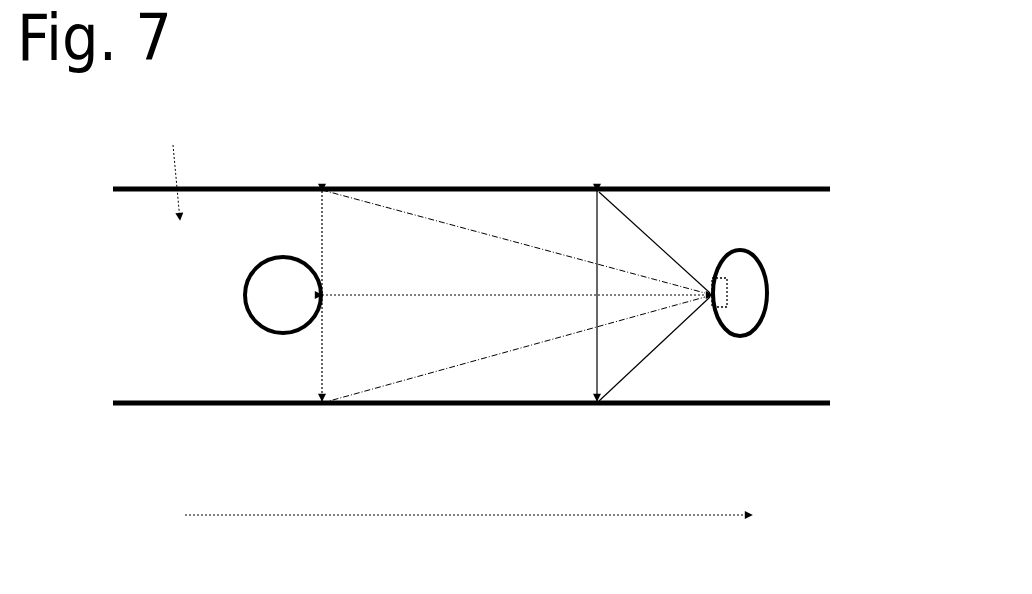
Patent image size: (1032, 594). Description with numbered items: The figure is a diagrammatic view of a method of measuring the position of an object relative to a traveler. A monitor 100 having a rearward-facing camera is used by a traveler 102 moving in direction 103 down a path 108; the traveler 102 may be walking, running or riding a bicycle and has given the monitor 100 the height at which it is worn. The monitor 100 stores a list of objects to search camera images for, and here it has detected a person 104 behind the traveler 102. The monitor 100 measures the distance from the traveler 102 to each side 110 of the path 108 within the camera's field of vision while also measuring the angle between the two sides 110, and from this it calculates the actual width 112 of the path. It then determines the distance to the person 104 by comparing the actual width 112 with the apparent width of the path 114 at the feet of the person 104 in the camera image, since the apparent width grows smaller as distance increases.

The monitor 100 is at (714, 279).
The traveler 102 is at (750, 295).
The direction 103 is at (468, 538).
The person 104 is at (268, 303).
The path 108 is at (171, 170).
The side of the path 110 is at (143, 193).
The width of the path 112 is at (597, 243).
The width of the path at the person's feet 114 is at (320, 250).